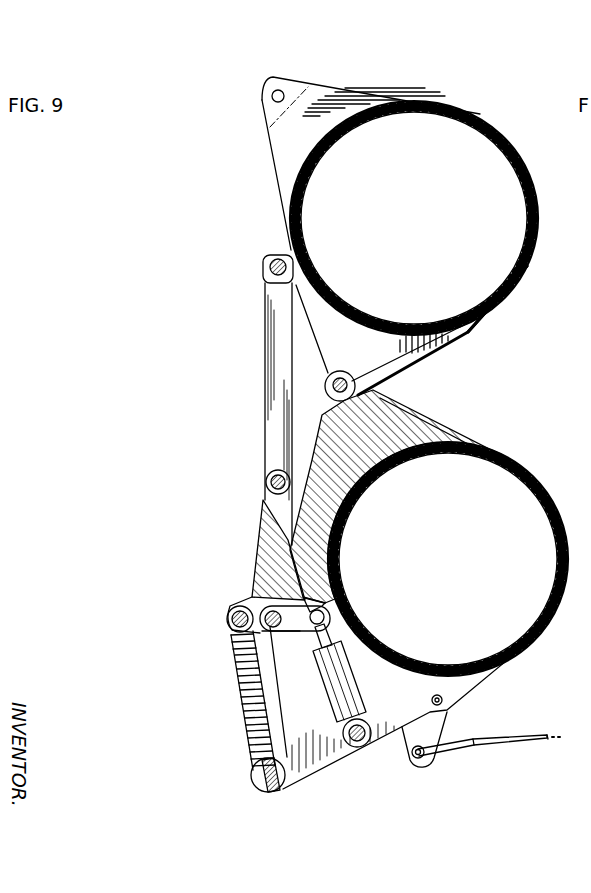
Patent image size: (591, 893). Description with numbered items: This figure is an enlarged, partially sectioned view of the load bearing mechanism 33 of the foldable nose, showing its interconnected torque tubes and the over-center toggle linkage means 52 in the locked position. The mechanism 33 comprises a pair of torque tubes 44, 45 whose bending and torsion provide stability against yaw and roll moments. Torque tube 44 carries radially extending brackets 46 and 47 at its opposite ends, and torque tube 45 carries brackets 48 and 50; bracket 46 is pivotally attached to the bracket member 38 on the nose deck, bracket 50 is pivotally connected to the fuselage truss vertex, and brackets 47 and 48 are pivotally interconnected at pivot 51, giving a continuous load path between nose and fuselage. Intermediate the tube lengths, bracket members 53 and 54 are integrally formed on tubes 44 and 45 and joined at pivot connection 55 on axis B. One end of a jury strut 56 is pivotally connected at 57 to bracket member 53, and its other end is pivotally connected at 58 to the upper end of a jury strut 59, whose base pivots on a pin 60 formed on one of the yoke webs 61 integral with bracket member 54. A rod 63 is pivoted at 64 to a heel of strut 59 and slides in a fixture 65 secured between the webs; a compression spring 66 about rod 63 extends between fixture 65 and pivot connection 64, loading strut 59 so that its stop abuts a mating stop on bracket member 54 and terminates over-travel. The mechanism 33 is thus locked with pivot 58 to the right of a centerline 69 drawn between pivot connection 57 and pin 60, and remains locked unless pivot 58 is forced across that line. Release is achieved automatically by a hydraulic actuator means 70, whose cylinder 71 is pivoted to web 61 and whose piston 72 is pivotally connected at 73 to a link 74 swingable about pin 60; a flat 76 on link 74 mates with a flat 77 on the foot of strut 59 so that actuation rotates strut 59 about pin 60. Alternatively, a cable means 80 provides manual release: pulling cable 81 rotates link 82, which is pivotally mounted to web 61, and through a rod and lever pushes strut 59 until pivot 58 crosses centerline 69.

The load bearing mechanism 33 is at (197, 205).
The bracket member 38 is at (271, 100).
The torque tube 44 is at (537, 268).
The torque tube 45 is at (545, 631).
The bracket 46 is at (357, 93).
The bracket 47 is at (462, 336).
The bracket 48 is at (450, 421).
The bracket 50 is at (426, 770).
The pivot 51 is at (325, 387).
The over-center toggle linkage means 52 is at (232, 436).
The bracket member 53 is at (439, 330).
The bracket member 54 is at (418, 404).
The pivot connection 55 is at (340, 378).
The jury strut 56 is at (262, 330).
The pivot connection 57 is at (268, 257).
The pivot connection 58 is at (266, 482).
The jury strut 59 is at (258, 525).
The pin 60 is at (246, 607).
The web 61 is at (338, 766).
The rod 63 is at (258, 791).
The pivot connection 64 is at (228, 619).
The fixture 65 is at (251, 778).
The compression spring 66 is at (243, 722).
The centerline 69 is at (290, 387).
The hydraulic actuator means 70 is at (318, 679).
The cylinder 71 is at (334, 718).
The piston 72 is at (332, 637).
The pivot connection 73 is at (326, 616).
The link 74 is at (282, 653).
The flat 76 is at (310, 597).
The flat 77 is at (322, 600).
The cable means 80 is at (534, 755).
The cable 81 is at (500, 745).
The link 82 is at (445, 733).